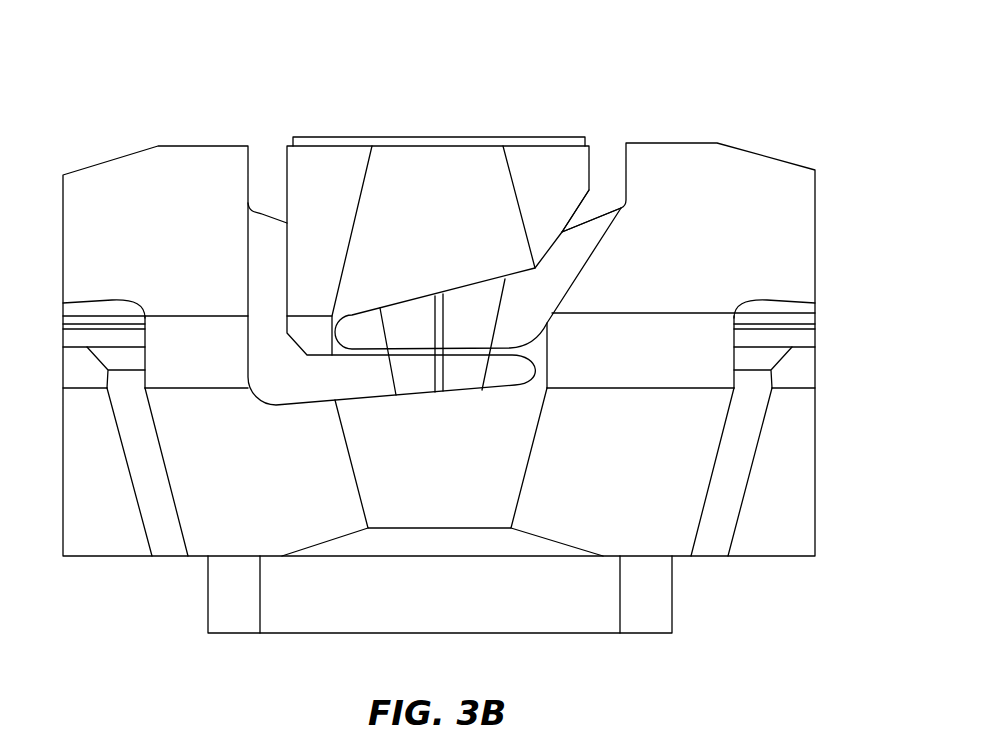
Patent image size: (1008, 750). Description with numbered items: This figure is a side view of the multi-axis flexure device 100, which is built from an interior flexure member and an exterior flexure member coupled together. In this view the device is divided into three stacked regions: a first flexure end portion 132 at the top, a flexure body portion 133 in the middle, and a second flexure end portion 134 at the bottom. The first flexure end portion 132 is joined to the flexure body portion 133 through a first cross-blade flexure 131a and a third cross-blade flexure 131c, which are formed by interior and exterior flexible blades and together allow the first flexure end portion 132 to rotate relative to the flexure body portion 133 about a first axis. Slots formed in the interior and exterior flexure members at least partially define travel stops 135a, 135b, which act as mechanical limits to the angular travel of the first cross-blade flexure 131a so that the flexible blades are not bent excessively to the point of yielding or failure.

The multi-axis flexure device 100 is at (328, 78).
The first cross-blade flexure 131a is at (414, 318).
The third cross-blade flexure 131c is at (442, 337).
The first flexure end portion 132 is at (513, 104).
The flexure body portion 133 is at (439, 382).
The second flexure end portion 134 is at (695, 630).
The travel stop 135a is at (276, 169).
The travel stop 135b is at (616, 162).